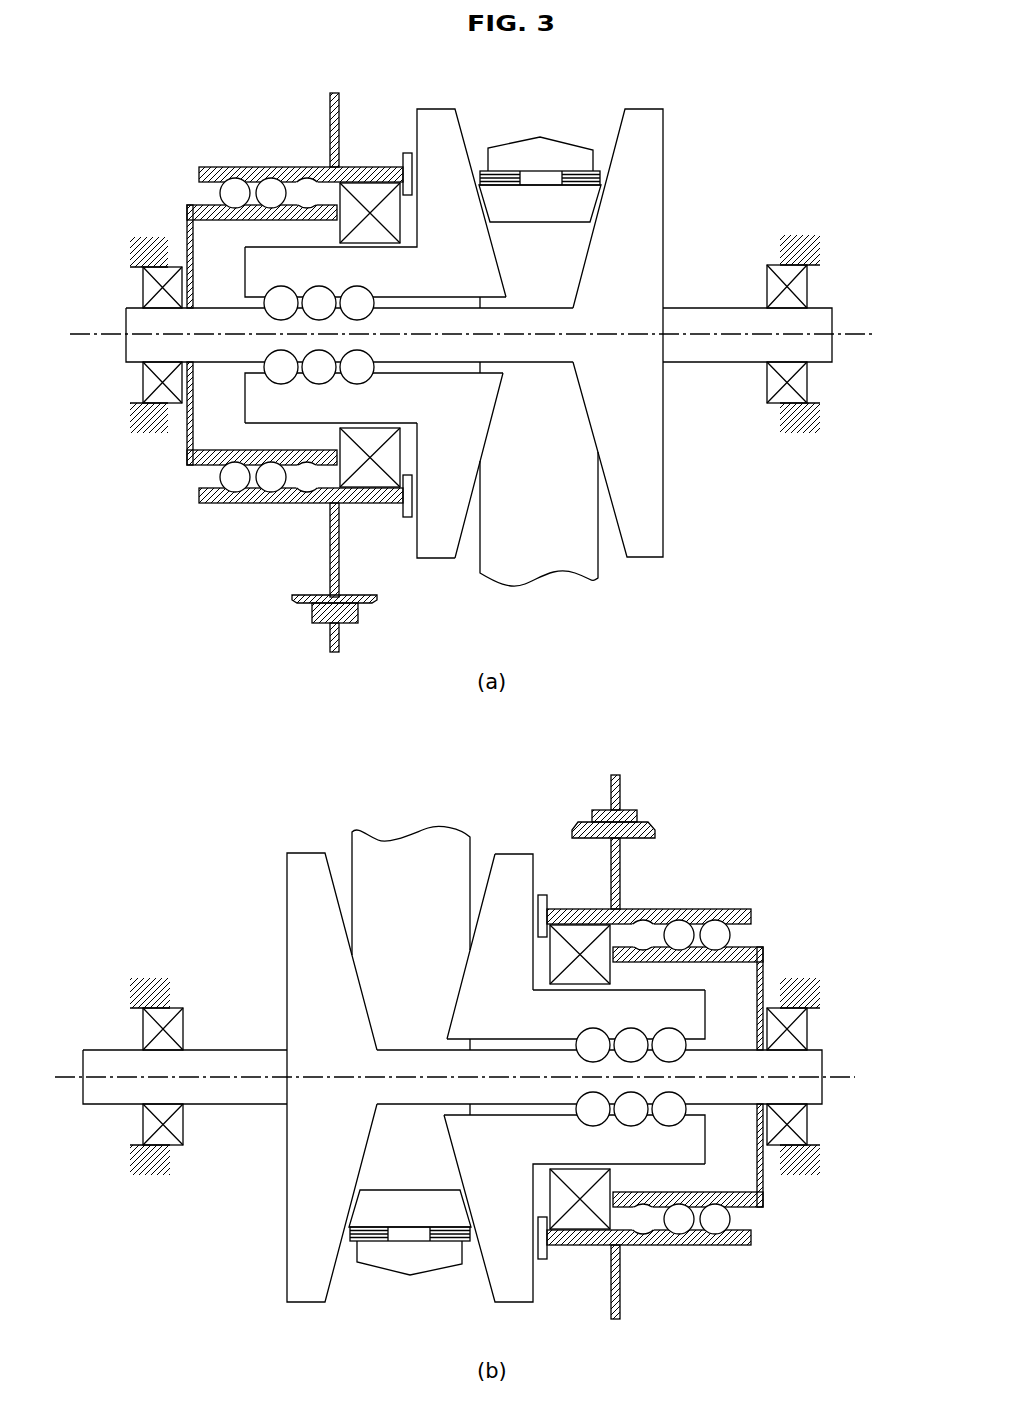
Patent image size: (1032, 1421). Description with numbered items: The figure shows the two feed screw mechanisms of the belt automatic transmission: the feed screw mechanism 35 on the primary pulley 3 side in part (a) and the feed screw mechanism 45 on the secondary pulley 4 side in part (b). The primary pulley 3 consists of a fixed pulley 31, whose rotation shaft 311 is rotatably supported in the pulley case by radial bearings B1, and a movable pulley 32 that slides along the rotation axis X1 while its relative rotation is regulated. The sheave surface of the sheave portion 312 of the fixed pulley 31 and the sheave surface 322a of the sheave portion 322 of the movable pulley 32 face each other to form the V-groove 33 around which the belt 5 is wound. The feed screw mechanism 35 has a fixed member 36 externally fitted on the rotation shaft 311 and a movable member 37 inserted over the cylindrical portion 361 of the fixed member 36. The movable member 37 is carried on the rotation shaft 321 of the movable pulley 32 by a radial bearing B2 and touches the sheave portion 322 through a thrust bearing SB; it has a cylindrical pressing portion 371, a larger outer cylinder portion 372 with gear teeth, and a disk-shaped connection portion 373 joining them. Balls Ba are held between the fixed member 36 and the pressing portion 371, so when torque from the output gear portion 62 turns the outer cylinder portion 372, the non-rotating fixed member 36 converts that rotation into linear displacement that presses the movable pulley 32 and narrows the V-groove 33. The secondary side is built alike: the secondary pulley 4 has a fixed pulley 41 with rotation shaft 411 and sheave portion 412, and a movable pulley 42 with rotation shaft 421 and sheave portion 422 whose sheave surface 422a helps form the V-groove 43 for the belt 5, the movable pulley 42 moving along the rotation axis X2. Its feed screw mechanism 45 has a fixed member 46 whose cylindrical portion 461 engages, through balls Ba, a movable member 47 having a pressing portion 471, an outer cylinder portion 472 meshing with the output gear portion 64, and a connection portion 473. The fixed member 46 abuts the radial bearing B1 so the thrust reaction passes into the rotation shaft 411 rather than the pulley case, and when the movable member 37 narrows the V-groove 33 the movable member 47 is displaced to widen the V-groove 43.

The primary pulley 3 is at (464, 375).
The fixed pulley 31 is at (450, 381).
The rotation shaft 311 is at (141, 343).
The sheave portion 312 is at (643, 438).
The movable pulley 32 is at (375, 381).
The rotation shaft 321 is at (407, 398).
The sheave portion 322 is at (453, 440).
The sheave surface 322a is at (445, 554).
The V-groove 33 is at (558, 440).
The feed screw mechanism 35 is at (240, 360).
The fixed member 36 is at (183, 433).
The cylindrical portion 361 is at (200, 467).
The movable member 37 is at (280, 360).
The pressing portion 371 is at (212, 504).
The outer cylinder portion 372 is at (297, 603).
The connection portion 373 is at (331, 578).
The output gear portion 62 is at (330, 645).
The belt 5 is at (577, 568).
The radial bearing B1 is at (150, 382).
The radial bearing B2 is at (374, 438).
The ball Ba is at (235, 476).
The thrust bearing SB is at (413, 492).
The rotation axis X1 is at (489, 335).
The secondary pulley 4 is at (485, 1045).
The fixed pulley 41 is at (484, 1077).
The rotation shaft 411 is at (810, 1088).
The sheave portion 412 is at (298, 982).
The movable pulley 42 is at (574, 1037).
The rotation shaft 421 is at (538, 1018).
The sheave portion 422 is at (500, 966).
The sheave surface 422a is at (478, 869).
The V-groove 43 is at (422, 1021).
The feed screw mechanism 45 is at (717, 1060).
The fixed member 46 is at (760, 990).
The cylindrical portion 461 is at (743, 953).
The movable member 47 is at (668, 1060).
The pressing portion 471 is at (690, 908).
The outer cylinder portion 472 is at (659, 822).
The connection portion 473 is at (620, 857).
The output gear portion 64 is at (612, 793).
The rotation axis X2 is at (471, 1080).